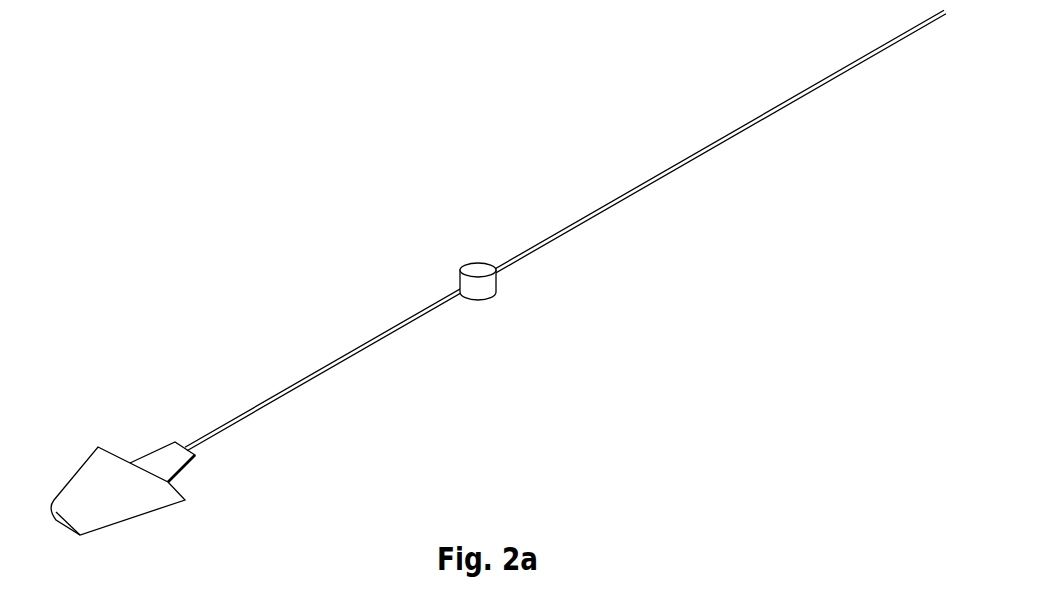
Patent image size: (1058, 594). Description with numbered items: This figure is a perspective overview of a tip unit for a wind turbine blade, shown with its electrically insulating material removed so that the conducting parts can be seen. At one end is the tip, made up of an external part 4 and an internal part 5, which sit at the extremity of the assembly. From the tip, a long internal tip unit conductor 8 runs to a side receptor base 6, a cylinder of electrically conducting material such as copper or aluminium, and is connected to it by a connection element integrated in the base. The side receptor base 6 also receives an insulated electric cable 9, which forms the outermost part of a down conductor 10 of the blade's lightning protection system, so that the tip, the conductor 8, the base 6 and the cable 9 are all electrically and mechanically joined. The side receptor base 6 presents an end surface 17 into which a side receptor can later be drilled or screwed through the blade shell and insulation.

The external part of the tip 4 is at (82, 498).
The internal part of the tip 5 is at (163, 458).
The internal tip unit conductor 8 is at (293, 388).
The end surface of the side receptor base 17 is at (483, 266).
The insulated electric cable 9 is at (610, 207).
The down conductor 10 is at (790, 103).
The side receptor base 6 is at (495, 287).